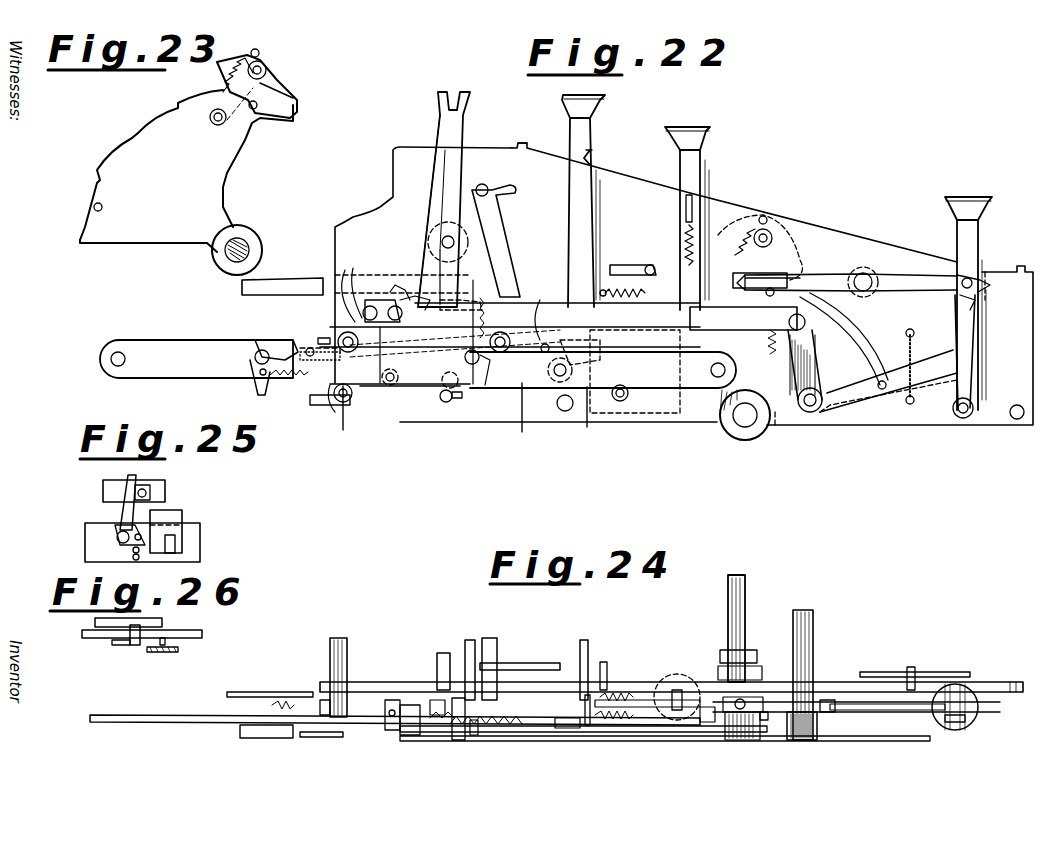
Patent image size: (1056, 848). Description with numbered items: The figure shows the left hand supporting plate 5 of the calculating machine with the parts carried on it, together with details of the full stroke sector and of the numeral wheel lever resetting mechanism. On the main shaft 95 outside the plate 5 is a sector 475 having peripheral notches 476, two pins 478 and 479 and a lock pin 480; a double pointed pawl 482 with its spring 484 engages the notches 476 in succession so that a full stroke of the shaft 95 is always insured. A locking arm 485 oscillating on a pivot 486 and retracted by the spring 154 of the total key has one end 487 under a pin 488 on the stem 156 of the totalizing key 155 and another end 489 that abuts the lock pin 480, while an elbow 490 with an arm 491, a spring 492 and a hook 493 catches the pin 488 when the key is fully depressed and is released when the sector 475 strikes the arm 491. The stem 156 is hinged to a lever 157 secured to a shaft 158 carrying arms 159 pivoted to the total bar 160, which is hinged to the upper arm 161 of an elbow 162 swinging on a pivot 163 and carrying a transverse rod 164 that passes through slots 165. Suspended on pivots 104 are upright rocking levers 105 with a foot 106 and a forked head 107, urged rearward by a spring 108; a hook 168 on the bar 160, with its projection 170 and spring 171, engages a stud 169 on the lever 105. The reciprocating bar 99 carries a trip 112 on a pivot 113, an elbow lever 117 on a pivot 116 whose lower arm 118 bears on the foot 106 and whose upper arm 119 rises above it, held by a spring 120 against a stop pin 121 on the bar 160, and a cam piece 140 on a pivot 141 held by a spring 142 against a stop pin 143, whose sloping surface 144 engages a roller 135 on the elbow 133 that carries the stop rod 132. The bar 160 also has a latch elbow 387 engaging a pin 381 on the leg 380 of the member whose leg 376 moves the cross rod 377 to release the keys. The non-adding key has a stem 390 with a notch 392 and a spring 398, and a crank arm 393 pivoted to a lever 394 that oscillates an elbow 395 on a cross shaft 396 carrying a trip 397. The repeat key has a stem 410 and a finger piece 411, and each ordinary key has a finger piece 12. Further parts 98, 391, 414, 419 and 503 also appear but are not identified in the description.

In FIG. 22, the supporting plate 5 is at (637, 284).
In FIG. 24, the supporting plate 5 is at (556, 691).
In FIG. 24, the finger piece 12 is at (265, 738).
In FIG. 23, the main shaft 95 is at (225, 255).
In FIG. 22, the main shaft 95 is at (742, 428).
In FIG. 24, the main shaft 95 is at (728, 603).
In FIG. 22, the boss 98 is at (713, 405).
In FIG. 24, the boss 98 is at (748, 742).
In FIG. 22, the bar 99 is at (418, 364).
In FIG. 25, the bar 99 is at (92, 537).
In FIG. 26, the bar 99 is at (95, 637).
In FIG. 24, the bar 99 is at (635, 735).
In FIG. 22, the pivot 104 is at (442, 241).
In FIG. 22, the upright rocking lever 105 is at (436, 211).
In FIG. 25, the upright rocking lever 105 is at (185, 515).
In FIG. 26, the upright rocking lever 105 is at (165, 653).
In FIG. 24, the upright rocking lever 105 is at (430, 740).
In FIG. 25, the foot 106 is at (195, 548).
In FIG. 26, the foot 106 is at (168, 642).
In FIG. 22, the forked head 107 is at (465, 100).
In FIG. 22, the spring 108 is at (528, 290).
In FIG. 24, the spring 108 is at (502, 735).
In FIG. 22, the trip 112 is at (268, 340).
In FIG. 22, the pivot 113 is at (250, 370).
In FIG. 22, the pivot 116 is at (474, 365).
In FIG. 25, the pivot 116 is at (116, 540).
In FIG. 22, the elbow lever 117 is at (486, 387).
In FIG. 25, the elbow lever 117 is at (115, 519).
In FIG. 26, the elbow lever 117 is at (120, 643).
In FIG. 25, the lower arm 118 is at (150, 552).
In FIG. 25, the upper arm 119 is at (122, 505).
In FIG. 25, the spring 120 is at (122, 542).
In FIG. 25, the stop pin 121 is at (160, 494).
In FIG. 26, the stop pin 121 is at (133, 645).
In FIG. 22, the rod 132 is at (488, 185).
In FIG. 24, the rod 132 is at (470, 640).
In FIG. 22, the elbow 133 is at (496, 241).
In FIG. 22, the roller 135 is at (342, 330).
In FIG. 22, the cam piece 140 is at (322, 338).
In FIG. 24, the cam piece 140 is at (320, 700).
In FIG. 22, the pivot 141 is at (318, 365).
In FIG. 22, the spring 142 is at (302, 345).
In FIG. 22, the stop pin 143 is at (275, 378).
In FIG. 22, the sloping surface 144 is at (308, 346).
In FIG. 22, the spring 154 is at (770, 335).
In FIG. 24, the spring 154 is at (765, 722).
In FIG. 22, the totalizing key 155 is at (985, 212).
In FIG. 22, the stem 156 is at (978, 237).
In FIG. 24, the stem 156 is at (970, 690).
In FIG. 22, the lever 157 is at (870, 360).
In FIG. 22, the shaft 158 is at (808, 412).
In FIG. 24, the shaft 158 is at (813, 650).
In FIG. 22, the arm 159 is at (800, 360).
In FIG. 24, the arm 159 is at (805, 742).
In FIG. 25, the bar 160 is at (108, 487).
In FIG. 26, the bar 160 is at (162, 622).
In FIG. 24, the bar 160 is at (665, 740).
In FIG. 22, the upper arm 161 is at (388, 385).
In FIG. 22, the elbow 162 is at (440, 384).
In FIG. 22, the pivot 163 is at (410, 392).
In FIG. 22, the transverse rod 164 is at (460, 400).
In FIG. 24, the transverse rod 164 is at (437, 660).
In FIG. 22, the slot 165 is at (443, 403).
In FIG. 22, the hook 168 is at (440, 285).
In FIG. 24, the hook 168 is at (440, 720).
In FIG. 22, the stud 169 is at (455, 300).
In FIG. 22, the projection 170 is at (354, 290).
In FIG. 22, the spring 171 is at (400, 290).
In FIG. 24, the spring 171 is at (400, 730).
In FIG. 22, the leg 376 is at (520, 413).
In FIG. 24, the leg 376 is at (518, 655).
In FIG. 22, the cross rod 377 is at (540, 370).
In FIG. 24, the cross rod 377 is at (497, 640).
In FIG. 22, the leg 380 is at (584, 415).
In FIG. 24, the leg 380 is at (577, 725).
In FIG. 24, the pin 381 is at (540, 730).
In FIG. 22, the latch elbow 387 is at (622, 300).
In FIG. 24, the latch elbow 387 is at (592, 722).
In FIG. 22, the key stem 390 is at (595, 203).
In FIG. 24, the key stem 390 is at (575, 660).
In FIG. 22, the key head 391 is at (598, 110).
In FIG. 22, the notch 392 is at (590, 150).
In FIG. 22, the crank arm 393 is at (551, 404).
In FIG. 22, the lever 394 is at (360, 417).
In FIG. 24, the lever 394 is at (478, 742).
In FIG. 22, the elbow 395 is at (328, 402).
In FIG. 24, the elbow 395 is at (312, 738).
In FIG. 22, the cross shaft 396 is at (342, 405).
In FIG. 24, the cross shaft 396 is at (347, 650).
In FIG. 22, the trip 397 is at (330, 410).
In FIG. 22, the spring 398 is at (548, 290).
In FIG. 22, the key stem 410 is at (700, 160).
In FIG. 24, the key stem 410 is at (683, 690).
In FIG. 22, the finger piece 411 is at (705, 138).
In FIG. 24, the bar 414 is at (262, 692).
In FIG. 22, the slot 419 is at (692, 205).
In FIG. 23, the sector 475 is at (186, 170).
In FIG. 22, the sector 475 is at (620, 348).
In FIG. 24, the sector 475 is at (622, 678).
In FIG. 23, the peripheral notches 476 is at (178, 105).
In FIG. 22, the peripheral notches 476 is at (612, 360).
In FIG. 24, the peripheral notches 476 is at (640, 676).
In FIG. 23, the pin 478 is at (102, 210).
In FIG. 22, the pin 478 is at (628, 396).
In FIG. 24, the pin 478 is at (604, 662).
In FIG. 23, the pin 479 is at (256, 110).
In FIG. 22, the pin 479 is at (772, 270).
In FIG. 23, the lock pin 480 is at (215, 122).
In FIG. 24, the lock pin 480 is at (716, 725).
In FIG. 23, the double pointed pawl 482 is at (285, 95).
In FIG. 22, the double pointed pawl 482 is at (772, 230).
In FIG. 24, the double pointed pawl 482 is at (772, 666).
In FIG. 23, the spring 484 is at (228, 82).
In FIG. 22, the spring 484 is at (735, 255).
In FIG. 24, the spring 484 is at (720, 655).
In FIG. 22, the locking arm 485 is at (915, 278).
In FIG. 24, the locking arm 485 is at (897, 715).
In FIG. 22, the pivot 486 is at (866, 274).
In FIG. 22, the end 487 is at (985, 290).
In FIG. 22, the pin 488 is at (972, 280).
In FIG. 24, the pin 488 is at (955, 725).
In FIG. 22, the end 489 is at (830, 255).
In FIG. 24, the end 489 is at (828, 715).
In FIG. 22, the elbow 490 is at (970, 380).
In FIG. 22, the arm 491 is at (930, 415).
In FIG. 24, the arm 491 is at (930, 672).
In FIG. 22, the spring 492 is at (915, 340).
In FIG. 24, the spring 492 is at (905, 675).
In FIG. 22, the hook 493 is at (978, 306).
In FIG. 22, the lug 503 is at (522, 142).